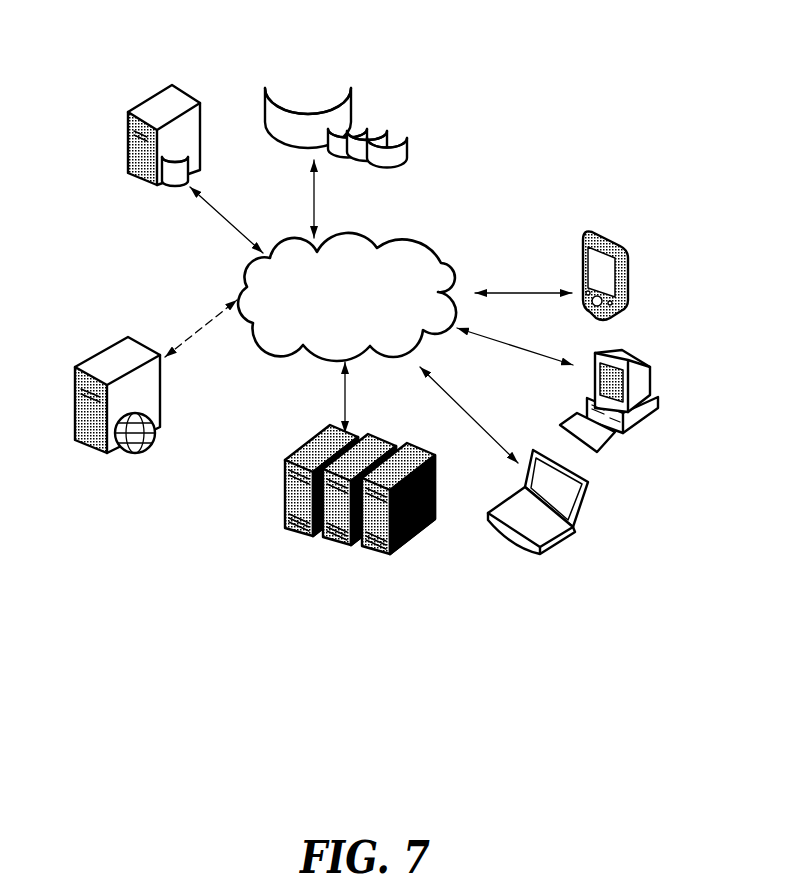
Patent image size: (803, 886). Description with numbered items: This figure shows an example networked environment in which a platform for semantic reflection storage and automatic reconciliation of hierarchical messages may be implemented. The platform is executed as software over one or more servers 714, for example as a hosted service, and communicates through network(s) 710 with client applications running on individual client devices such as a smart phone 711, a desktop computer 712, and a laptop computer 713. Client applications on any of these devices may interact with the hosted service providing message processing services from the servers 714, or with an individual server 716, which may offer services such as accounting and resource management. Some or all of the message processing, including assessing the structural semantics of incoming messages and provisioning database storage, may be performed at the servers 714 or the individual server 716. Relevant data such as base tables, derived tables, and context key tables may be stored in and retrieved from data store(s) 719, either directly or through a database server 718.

The network(s) 710 is at (351, 225).
The smart phone 711 is at (639, 236).
The desktop computer 712 is at (629, 347).
The laptop computer 713 is at (601, 482).
The servers 714 is at (312, 439).
The individual server 716 is at (98, 346).
The database server 718 is at (162, 196).
The data store(s) 719 is at (323, 40).